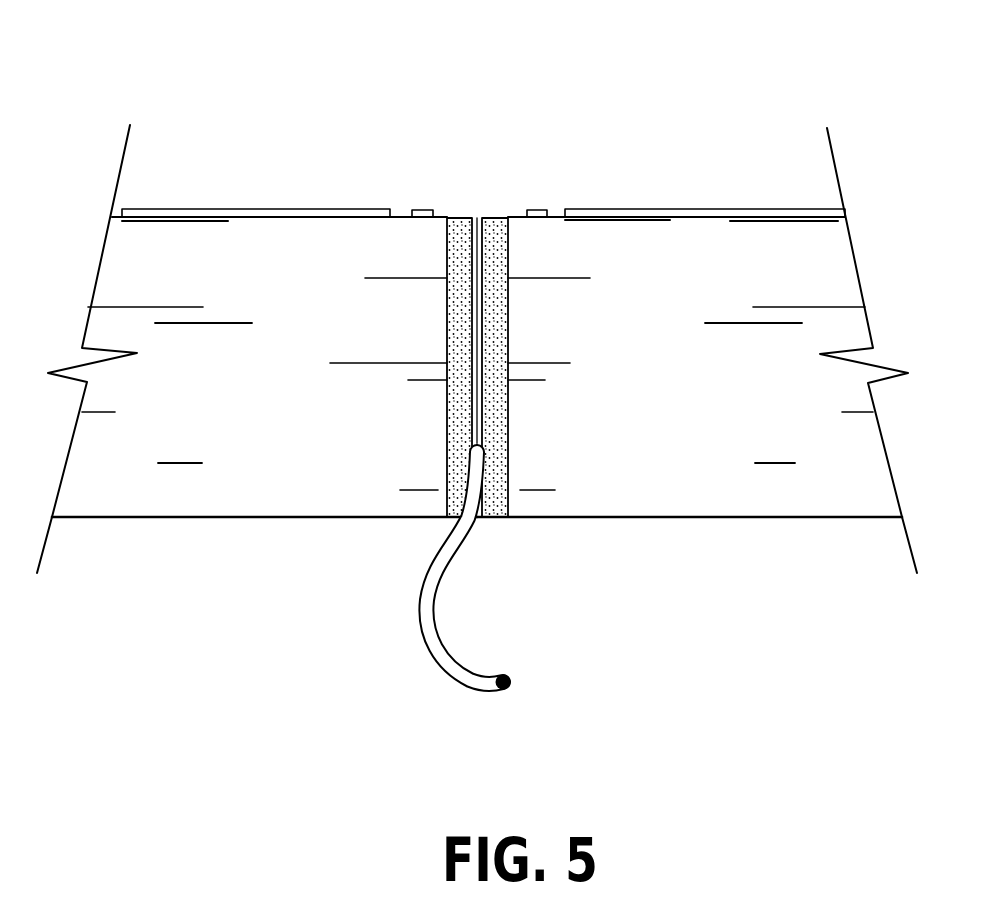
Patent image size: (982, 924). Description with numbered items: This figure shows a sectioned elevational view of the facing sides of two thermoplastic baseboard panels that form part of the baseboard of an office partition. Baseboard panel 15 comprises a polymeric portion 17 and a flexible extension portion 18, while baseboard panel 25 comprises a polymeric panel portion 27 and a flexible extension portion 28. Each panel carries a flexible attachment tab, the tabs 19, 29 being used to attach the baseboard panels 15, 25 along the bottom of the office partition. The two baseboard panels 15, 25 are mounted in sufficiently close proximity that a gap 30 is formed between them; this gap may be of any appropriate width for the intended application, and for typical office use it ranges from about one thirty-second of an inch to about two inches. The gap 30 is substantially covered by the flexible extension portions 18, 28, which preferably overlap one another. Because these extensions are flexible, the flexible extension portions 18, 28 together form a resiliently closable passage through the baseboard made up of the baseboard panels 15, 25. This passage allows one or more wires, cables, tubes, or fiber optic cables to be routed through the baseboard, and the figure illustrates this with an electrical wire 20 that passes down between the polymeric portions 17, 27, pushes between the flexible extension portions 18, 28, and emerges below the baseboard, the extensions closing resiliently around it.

The baseboard panel 15 is at (330, 200).
The baseboard panel 25 is at (768, 197).
The polymeric portion 17 is at (253, 517).
The polymeric panel portion 27 is at (733, 517).
The flexible attachment tab 19 is at (413, 212).
The flexible attachment tab 29 is at (548, 212).
The flexible extension portion 18 is at (463, 437).
The flexible extension portion 28 is at (497, 330).
The electrical wire 20 is at (465, 653).
The gap 30 is at (547, 202).